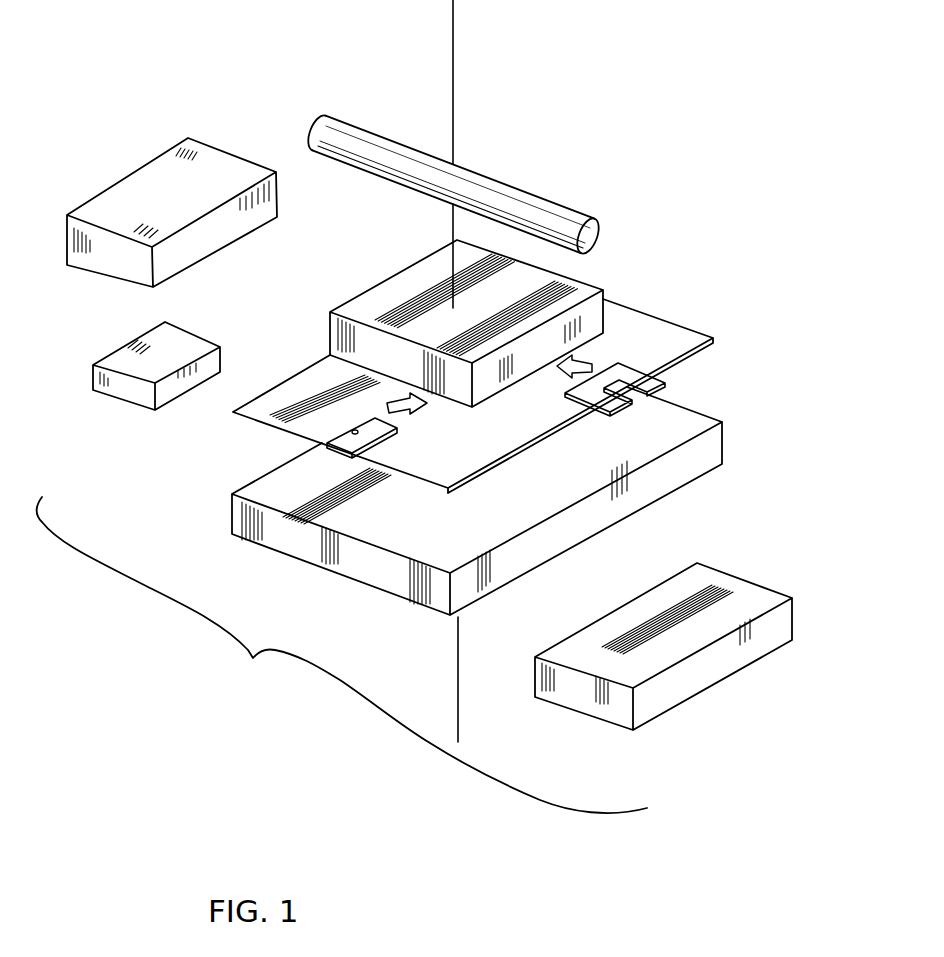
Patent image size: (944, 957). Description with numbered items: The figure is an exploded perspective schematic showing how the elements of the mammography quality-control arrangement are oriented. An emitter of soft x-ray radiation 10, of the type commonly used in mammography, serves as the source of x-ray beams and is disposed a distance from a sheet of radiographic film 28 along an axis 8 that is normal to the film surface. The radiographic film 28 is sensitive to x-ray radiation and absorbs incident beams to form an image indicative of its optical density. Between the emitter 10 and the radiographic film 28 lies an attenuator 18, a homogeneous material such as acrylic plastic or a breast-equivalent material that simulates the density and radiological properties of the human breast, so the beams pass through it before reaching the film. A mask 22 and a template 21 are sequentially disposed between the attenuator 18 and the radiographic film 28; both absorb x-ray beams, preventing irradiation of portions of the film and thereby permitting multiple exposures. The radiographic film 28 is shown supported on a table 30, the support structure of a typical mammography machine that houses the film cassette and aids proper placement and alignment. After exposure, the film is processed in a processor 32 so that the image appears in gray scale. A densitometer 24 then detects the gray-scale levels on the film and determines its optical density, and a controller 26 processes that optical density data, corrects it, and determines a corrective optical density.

The axis 8 is at (453, 42).
The emitter of soft x-ray radiation 10 is at (578, 208).
The attenuator 18 is at (603, 293).
The template 21 is at (320, 445).
The mask 22 is at (660, 380).
The densitometer 24 is at (103, 395).
The controller 26 is at (203, 262).
The radiographic film 28 is at (703, 338).
The table 30 is at (662, 503).
The processor 32 is at (700, 697).